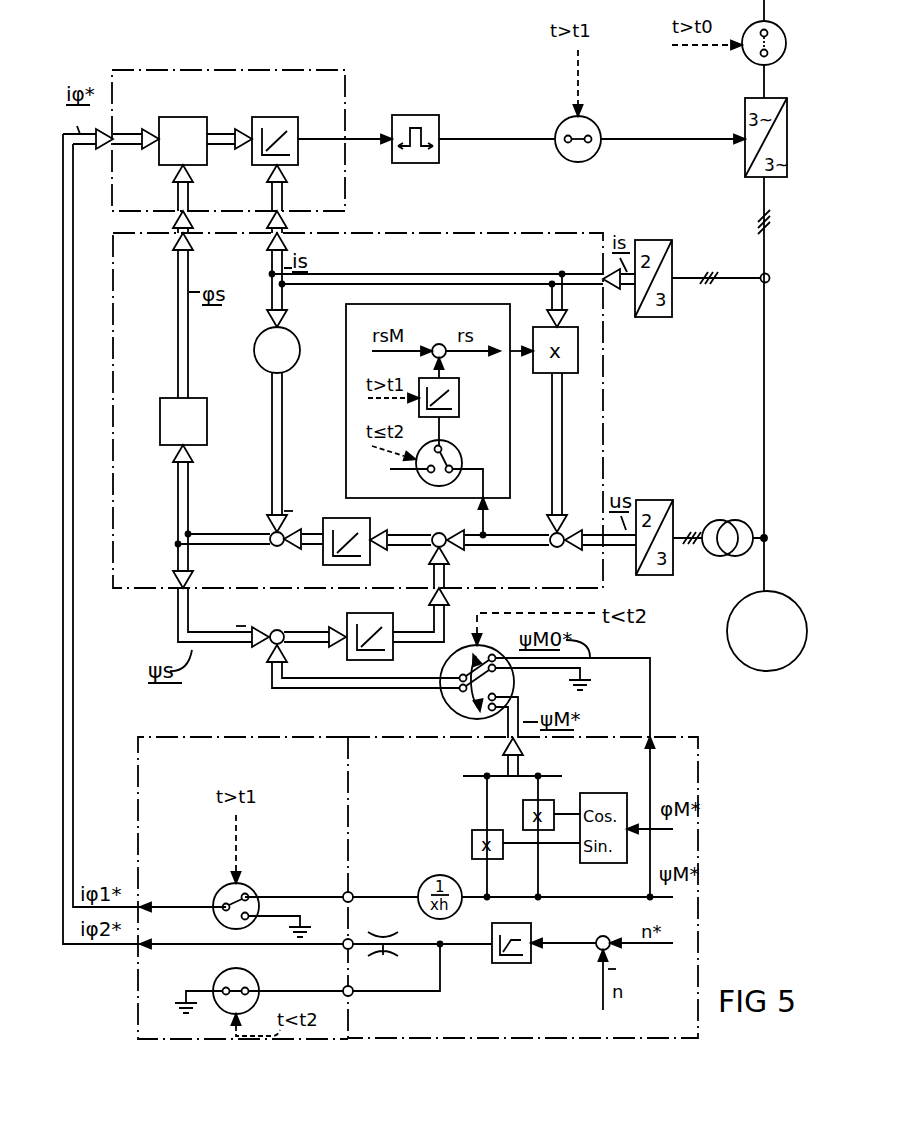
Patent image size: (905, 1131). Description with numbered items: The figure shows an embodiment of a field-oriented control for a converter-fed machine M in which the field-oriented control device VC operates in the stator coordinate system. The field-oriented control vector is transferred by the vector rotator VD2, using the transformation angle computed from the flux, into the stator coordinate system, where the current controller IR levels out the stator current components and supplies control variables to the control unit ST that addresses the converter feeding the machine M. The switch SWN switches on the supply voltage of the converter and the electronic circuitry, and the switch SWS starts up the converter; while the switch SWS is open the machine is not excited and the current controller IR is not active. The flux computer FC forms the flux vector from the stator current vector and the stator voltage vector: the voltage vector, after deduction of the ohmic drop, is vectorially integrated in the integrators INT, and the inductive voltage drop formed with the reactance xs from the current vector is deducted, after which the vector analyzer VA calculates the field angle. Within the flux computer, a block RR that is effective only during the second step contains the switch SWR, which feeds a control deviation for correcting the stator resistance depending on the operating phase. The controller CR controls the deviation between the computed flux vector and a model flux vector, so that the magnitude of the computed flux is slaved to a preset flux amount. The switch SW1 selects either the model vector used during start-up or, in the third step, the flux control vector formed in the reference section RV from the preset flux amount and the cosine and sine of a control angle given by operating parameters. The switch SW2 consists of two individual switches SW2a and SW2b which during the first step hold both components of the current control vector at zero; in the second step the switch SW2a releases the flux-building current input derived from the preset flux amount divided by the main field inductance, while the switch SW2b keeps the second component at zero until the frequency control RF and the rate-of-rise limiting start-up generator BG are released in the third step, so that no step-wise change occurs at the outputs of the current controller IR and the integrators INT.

The field-oriented control device VC is at (251, 70).
The vector rotator VD2 is at (183, 141).
The current controller IR is at (276, 117).
The control unit ST is at (415, 118).
The switch SWS is at (562, 120).
The switch SWN is at (749, 60).
The flux computer FC is at (484, 233).
The vector analyzer VA is at (183, 421).
The inductive reactance factor xs is at (277, 350).
The control block RR is at (346, 414).
The switch SWR is at (462, 459).
The integrators INT is at (339, 518).
The controller CR is at (350, 623).
The switching device SW1 is at (442, 700).
The reference value generator RV is at (676, 737).
The switch SW2 is at (138, 1010).
The individual switch SW2a is at (264, 895).
The individual switch SW2b is at (252, 975).
The start-up generator BG is at (385, 959).
The frequency control RF is at (508, 966).
The motor M is at (767, 631).